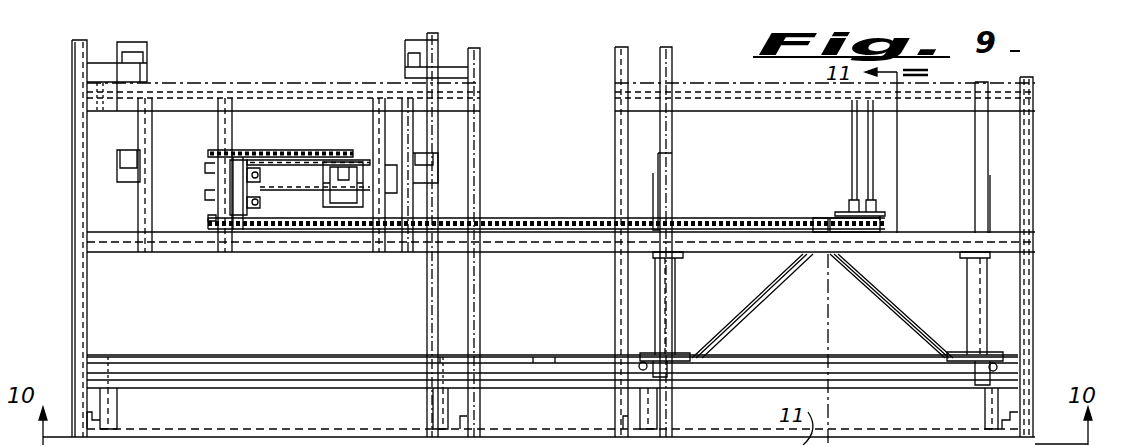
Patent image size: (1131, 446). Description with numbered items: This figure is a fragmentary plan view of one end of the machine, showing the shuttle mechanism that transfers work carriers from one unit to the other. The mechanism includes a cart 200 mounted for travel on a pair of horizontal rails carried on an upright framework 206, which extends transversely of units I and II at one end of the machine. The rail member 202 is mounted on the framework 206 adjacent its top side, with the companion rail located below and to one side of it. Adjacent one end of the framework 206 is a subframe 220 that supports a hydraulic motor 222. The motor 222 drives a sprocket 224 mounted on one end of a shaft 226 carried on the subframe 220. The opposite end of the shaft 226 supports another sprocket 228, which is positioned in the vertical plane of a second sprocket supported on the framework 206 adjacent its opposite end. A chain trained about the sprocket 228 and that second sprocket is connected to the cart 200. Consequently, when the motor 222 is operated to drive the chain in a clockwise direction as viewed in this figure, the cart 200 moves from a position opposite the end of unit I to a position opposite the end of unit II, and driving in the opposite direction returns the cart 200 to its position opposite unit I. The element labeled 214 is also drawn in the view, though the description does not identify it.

The cart 200 is at (637, 334).
The horizontal rail 202 is at (537, 250).
The upright framework 206 is at (1027, 367).
The roller 214 is at (641, 362).
The subframe 220 is at (407, 252).
The hydraulic motor 222 is at (345, 207).
The sprocket 224 is at (213, 150).
The shaft 226 is at (232, 183).
The sprocket 228 is at (208, 218).